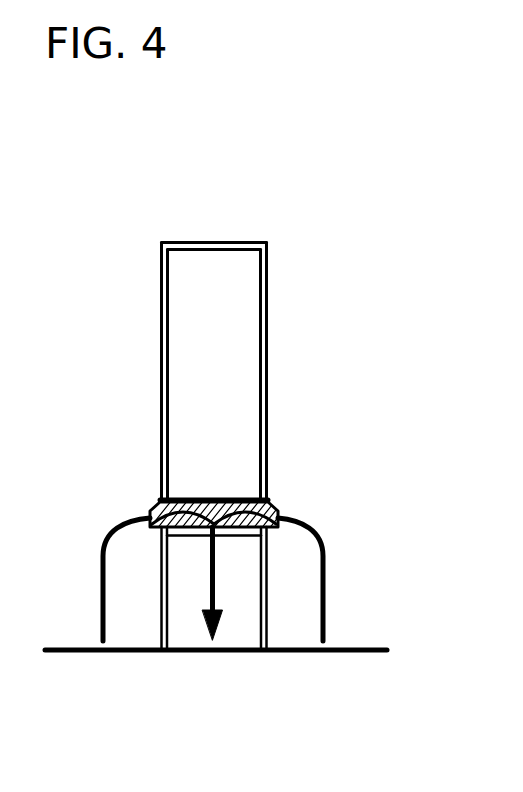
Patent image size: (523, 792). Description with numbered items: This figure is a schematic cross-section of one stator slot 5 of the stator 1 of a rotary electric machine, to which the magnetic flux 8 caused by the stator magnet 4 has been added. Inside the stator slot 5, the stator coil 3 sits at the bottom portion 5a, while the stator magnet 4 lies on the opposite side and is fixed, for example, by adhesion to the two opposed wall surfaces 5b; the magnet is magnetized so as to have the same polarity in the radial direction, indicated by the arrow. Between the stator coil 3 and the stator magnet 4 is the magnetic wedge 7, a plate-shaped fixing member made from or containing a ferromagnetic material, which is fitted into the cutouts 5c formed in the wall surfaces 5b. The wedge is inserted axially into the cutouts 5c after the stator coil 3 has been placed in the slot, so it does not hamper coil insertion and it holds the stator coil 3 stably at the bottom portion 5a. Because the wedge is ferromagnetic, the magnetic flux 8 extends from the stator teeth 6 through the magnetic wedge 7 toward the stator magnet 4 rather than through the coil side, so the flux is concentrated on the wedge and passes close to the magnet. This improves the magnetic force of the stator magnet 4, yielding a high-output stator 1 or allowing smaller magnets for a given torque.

The stator 1 is at (376, 242).
The stator coil 3 is at (250, 415).
The stator magnet 4 is at (185, 632).
The stator slot 5 is at (211, 240).
The bottom portion 5a is at (235, 247).
The wall surfaces 5b is at (159, 368).
The cutouts 5c is at (278, 512).
The stator teeth 6 is at (137, 630).
The magnetic wedge 7 is at (150, 513).
The magnetic flux 8 is at (326, 582).